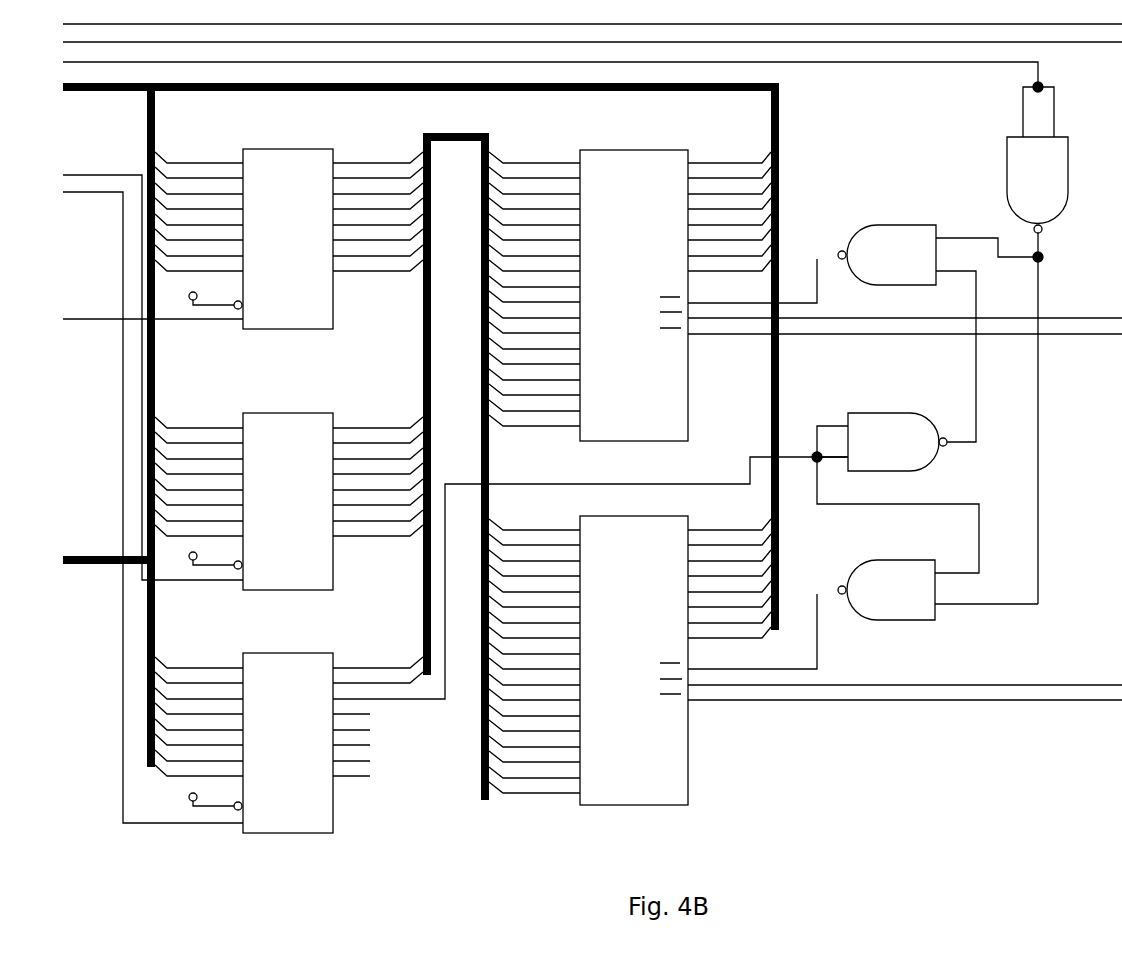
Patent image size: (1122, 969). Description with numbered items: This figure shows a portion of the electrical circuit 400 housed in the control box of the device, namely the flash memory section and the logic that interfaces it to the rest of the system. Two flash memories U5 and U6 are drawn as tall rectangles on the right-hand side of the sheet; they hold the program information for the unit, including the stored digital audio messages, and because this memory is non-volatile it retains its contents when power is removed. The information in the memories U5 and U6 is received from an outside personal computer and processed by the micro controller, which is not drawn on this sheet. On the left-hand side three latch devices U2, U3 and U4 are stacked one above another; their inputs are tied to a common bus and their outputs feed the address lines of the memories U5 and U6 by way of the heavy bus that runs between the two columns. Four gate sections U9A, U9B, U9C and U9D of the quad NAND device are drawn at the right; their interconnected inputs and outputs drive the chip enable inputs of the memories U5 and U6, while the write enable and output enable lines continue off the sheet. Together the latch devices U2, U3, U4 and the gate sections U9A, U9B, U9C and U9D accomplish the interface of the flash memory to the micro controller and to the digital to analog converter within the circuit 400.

The electrical circuit 400 is at (592, 439).
The CD74HCT373E micro control U2 is at (289, 239).
The CD74HCT373E micro control U3 is at (289, 501).
The CD74HCT373E micro control U4 is at (501, 656).
The flash memory U5 is at (805, 296).
The flash memory U6 is at (805, 662).
The CD4011CN micro control gate section U9A is at (942, 323).
The CD4011CN micro control gate section U9B is at (1064, 343).
The CD4011CN micro control gate section U9C is at (895, 480).
The CD4011CN micro control gate section U9D is at (928, 590).